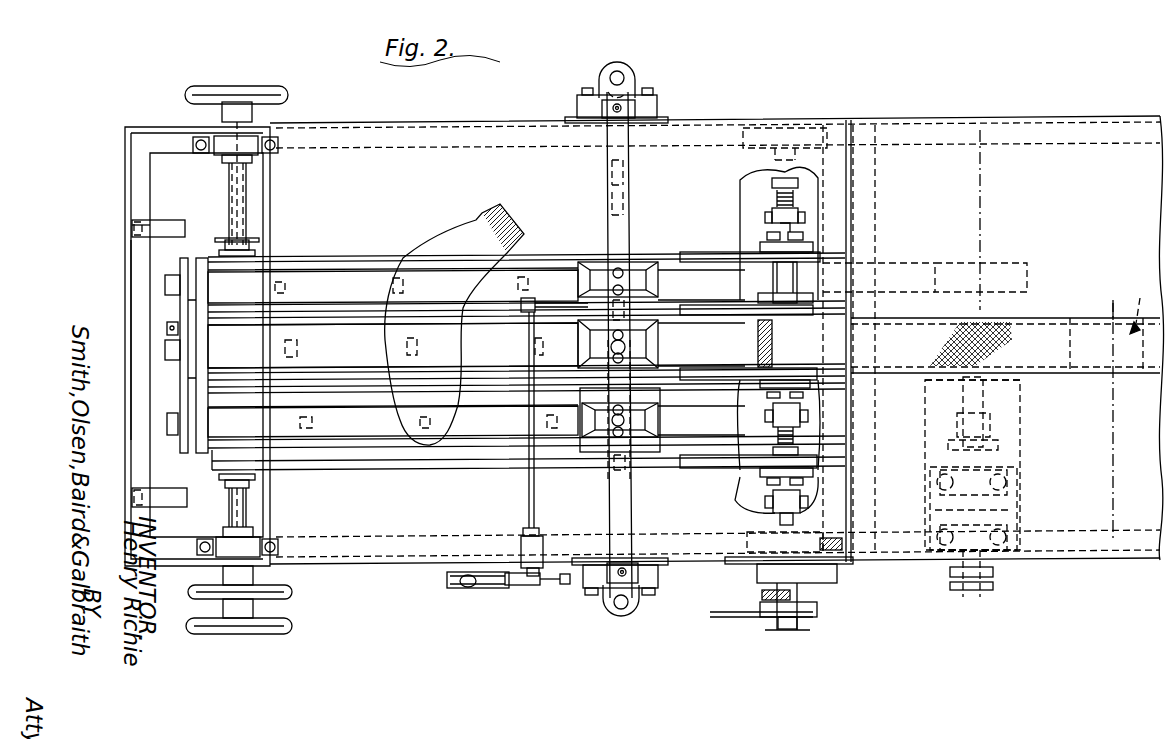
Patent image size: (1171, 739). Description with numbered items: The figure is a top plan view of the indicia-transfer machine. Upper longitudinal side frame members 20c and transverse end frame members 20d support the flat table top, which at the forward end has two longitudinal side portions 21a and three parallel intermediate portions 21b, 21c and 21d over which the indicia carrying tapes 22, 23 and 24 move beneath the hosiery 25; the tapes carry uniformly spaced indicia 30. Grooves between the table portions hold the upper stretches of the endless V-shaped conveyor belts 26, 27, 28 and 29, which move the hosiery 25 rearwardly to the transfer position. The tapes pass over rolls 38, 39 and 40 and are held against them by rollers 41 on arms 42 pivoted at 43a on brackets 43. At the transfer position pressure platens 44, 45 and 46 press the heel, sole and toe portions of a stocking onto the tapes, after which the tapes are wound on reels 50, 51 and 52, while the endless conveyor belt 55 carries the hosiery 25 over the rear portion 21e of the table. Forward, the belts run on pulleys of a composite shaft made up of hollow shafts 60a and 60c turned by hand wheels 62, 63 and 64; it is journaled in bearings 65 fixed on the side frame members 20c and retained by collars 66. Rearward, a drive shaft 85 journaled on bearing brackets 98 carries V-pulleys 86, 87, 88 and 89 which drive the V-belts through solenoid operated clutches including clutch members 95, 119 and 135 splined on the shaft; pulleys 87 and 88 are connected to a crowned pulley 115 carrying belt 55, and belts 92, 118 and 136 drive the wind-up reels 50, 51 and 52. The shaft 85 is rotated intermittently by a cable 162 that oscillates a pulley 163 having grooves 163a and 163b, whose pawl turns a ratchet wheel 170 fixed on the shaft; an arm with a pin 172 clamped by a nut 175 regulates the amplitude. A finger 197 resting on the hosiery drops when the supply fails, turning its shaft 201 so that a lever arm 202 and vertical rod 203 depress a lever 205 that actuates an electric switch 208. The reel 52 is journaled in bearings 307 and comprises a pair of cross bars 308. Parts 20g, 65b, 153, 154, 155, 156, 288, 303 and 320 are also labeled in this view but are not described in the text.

The upper longitudinal side frame members 20c is at (195, 566).
The transverse end frame members 20d is at (125, 430).
The mounting plate 20g is at (662, 118).
The longitudinal side portions 21a is at (428, 200).
The intermediate table portion 21b is at (332, 262).
The intermediate table portion 21c is at (312, 385).
The intermediate table portion 21d is at (393, 465).
The rear portion of the table 21e is at (1118, 229).
The indicia carrying tape 22 is at (323, 296).
The indicia carrying tape 23 is at (336, 359).
The indicia carrying tape 24 is at (348, 434).
The hosiery 25 is at (470, 225).
The endless V-shaped conveyor belt 26 is at (283, 258).
The endless V-shaped conveyor belt 27 is at (358, 312).
The endless V-shaped conveyor belt 28 is at (335, 378).
The endless V-shaped conveyor belt 29 is at (350, 472).
The indicia 30 is at (401, 272).
The roll 38 is at (167, 325).
The roll 39 is at (165, 352).
The roll 40 is at (210, 470).
The rollers 41 is at (165, 283).
The arms 42 is at (195, 258).
The brackets 43 is at (160, 222).
The pivot 43a is at (132, 228).
The pressure platen 44 is at (640, 268).
The pressure platen 45 is at (646, 340).
The pressure platen 46 is at (645, 420).
The reel 50 is at (1003, 264).
The reel 51 is at (996, 427).
The reel 52 is at (1140, 304).
The endless conveyor belt 55 is at (1040, 332).
The hollow shaft 60a is at (230, 198).
The hollow shaft 60c is at (250, 500).
The hand wheel 62 is at (288, 95).
The hand wheel 63 is at (292, 625).
The hand wheel 64 is at (292, 591).
The bearings 65 is at (248, 150).
The bearing block 65b is at (250, 545).
The collars 66 is at (246, 162).
The drive shaft 85 is at (772, 182).
The V-pulley 86 is at (813, 247).
The V-pulley 87 is at (813, 298).
The V-pulley 88 is at (817, 375).
The V-pulley 89 is at (817, 470).
The endless belt 92 is at (760, 255).
The clutch member 95 is at (798, 218).
The bearing brackets 98 is at (765, 148).
The crowned pulley 115 is at (870, 343).
The endless belt 118 is at (760, 385).
The clutch member 119 is at (780, 430).
The clutch member 135 is at (773, 505).
The belt 136 is at (767, 480).
The pivot pin 153 is at (617, 72).
The bracket 154 is at (638, 78).
The rack bar 155 is at (630, 510).
The bolt 156 is at (615, 112).
The cable 162 is at (745, 618).
The pulley 163 is at (800, 630).
The annular groove 163a is at (805, 620).
The annular groove 163b is at (817, 613).
The ratchet wheel 170 is at (747, 540).
The pin 172 is at (837, 575).
The clamping nut 175 is at (842, 540).
The finger 197 is at (548, 300).
The shaft 201 is at (534, 500).
The lever arm 202 is at (556, 585).
The vertical rod 203 is at (566, 585).
The lever 205 is at (520, 585).
The electric switch 208 is at (470, 590).
The slide rod 288 is at (165, 310).
The clamp block 303 is at (1007, 512).
The bearings 307 is at (1007, 485).
The cross bars 308 is at (1017, 470).
The clamp stem 320 is at (983, 378).